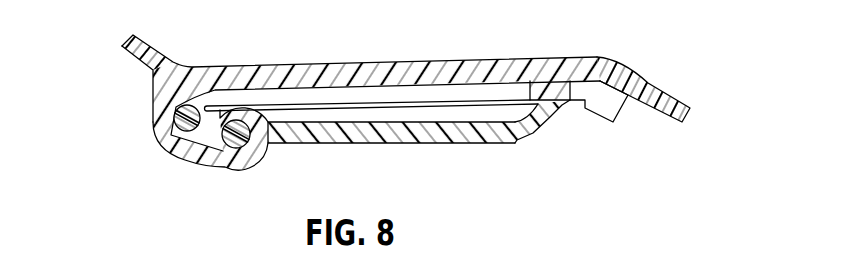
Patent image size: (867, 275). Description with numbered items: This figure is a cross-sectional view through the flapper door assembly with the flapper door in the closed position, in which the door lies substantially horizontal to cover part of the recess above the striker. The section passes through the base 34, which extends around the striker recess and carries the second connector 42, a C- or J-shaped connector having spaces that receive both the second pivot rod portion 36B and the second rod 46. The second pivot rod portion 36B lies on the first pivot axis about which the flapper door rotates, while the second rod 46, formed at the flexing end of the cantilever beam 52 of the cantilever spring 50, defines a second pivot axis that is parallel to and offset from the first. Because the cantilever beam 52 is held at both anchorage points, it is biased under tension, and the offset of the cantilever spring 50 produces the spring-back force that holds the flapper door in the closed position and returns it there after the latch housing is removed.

The base 34 is at (652, 82).
The second pivot rod portion 36B is at (153, 98).
The second connector 42 is at (182, 150).
The second rod 46 is at (240, 167).
The cantilever spring 50 is at (497, 146).
The cantilever beam 52 is at (427, 145).